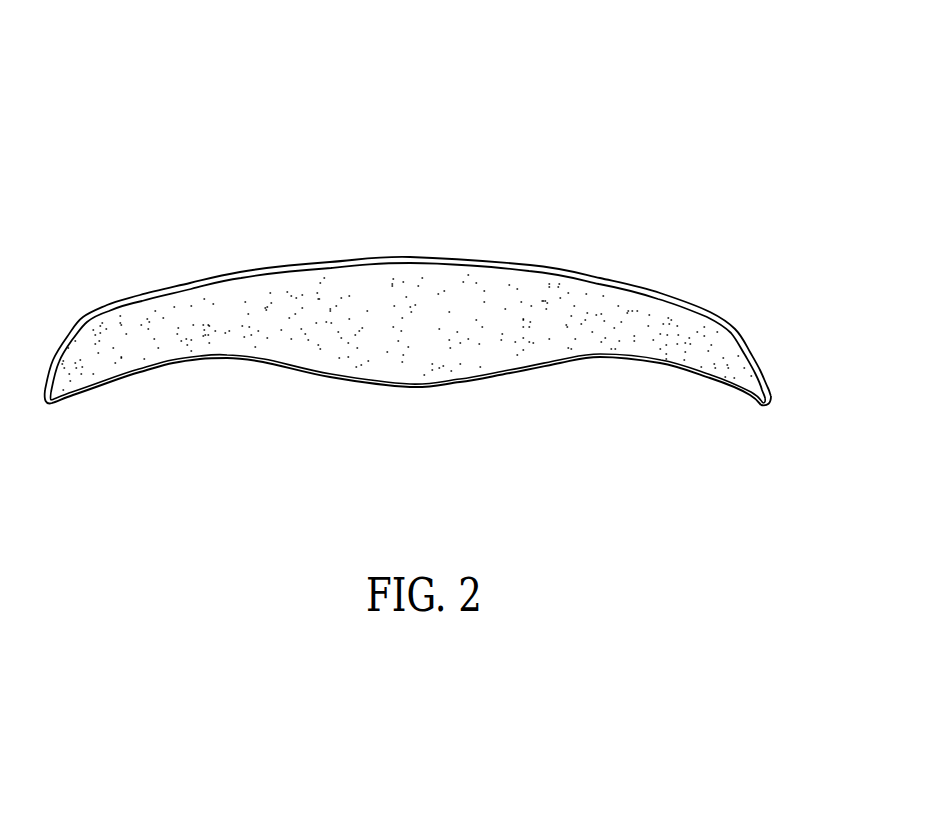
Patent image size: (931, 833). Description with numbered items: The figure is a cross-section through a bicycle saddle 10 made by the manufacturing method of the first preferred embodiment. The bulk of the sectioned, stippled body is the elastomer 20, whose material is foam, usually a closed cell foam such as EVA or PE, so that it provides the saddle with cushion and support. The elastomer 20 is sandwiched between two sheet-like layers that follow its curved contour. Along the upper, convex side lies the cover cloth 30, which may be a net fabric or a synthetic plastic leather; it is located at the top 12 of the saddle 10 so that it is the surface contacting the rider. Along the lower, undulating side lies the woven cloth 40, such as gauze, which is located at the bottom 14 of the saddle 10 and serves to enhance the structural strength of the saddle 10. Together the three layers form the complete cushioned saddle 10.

The saddle 10 is at (561, 83).
The top 12 is at (421, 243).
The bottom 14 is at (445, 400).
The elastomer 20 is at (563, 320).
The cover cloth 30 is at (275, 266).
The woven cloth 40 is at (200, 362).